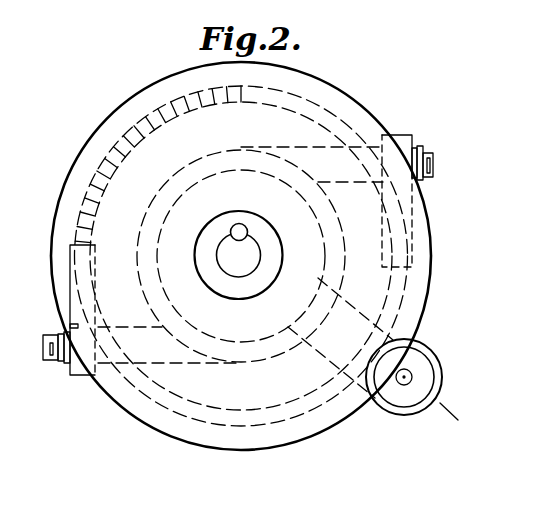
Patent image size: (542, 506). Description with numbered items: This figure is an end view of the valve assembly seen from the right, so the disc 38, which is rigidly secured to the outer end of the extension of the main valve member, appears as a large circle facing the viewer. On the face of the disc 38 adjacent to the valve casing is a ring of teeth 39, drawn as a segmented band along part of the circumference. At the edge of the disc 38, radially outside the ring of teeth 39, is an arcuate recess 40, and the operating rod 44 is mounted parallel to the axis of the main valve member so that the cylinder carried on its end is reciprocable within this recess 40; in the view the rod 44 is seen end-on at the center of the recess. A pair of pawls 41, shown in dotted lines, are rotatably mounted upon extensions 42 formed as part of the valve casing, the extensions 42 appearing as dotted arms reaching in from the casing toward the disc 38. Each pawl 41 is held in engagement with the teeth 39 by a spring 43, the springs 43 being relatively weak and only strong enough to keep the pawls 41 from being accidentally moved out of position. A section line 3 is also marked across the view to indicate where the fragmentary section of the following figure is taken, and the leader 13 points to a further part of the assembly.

The section line 3— 3 is at (362, 350).
The shaft 13 is at (440, 403).
The disc 38 is at (86, 146).
The ring of teeth 39 is at (146, 120).
The arcuate recess 40 is at (393, 338).
The pawls 41 is at (412, 233).
The extensions 42 is at (318, 147).
The springs 43 is at (420, 150).
The operating rod 44 is at (411, 372).